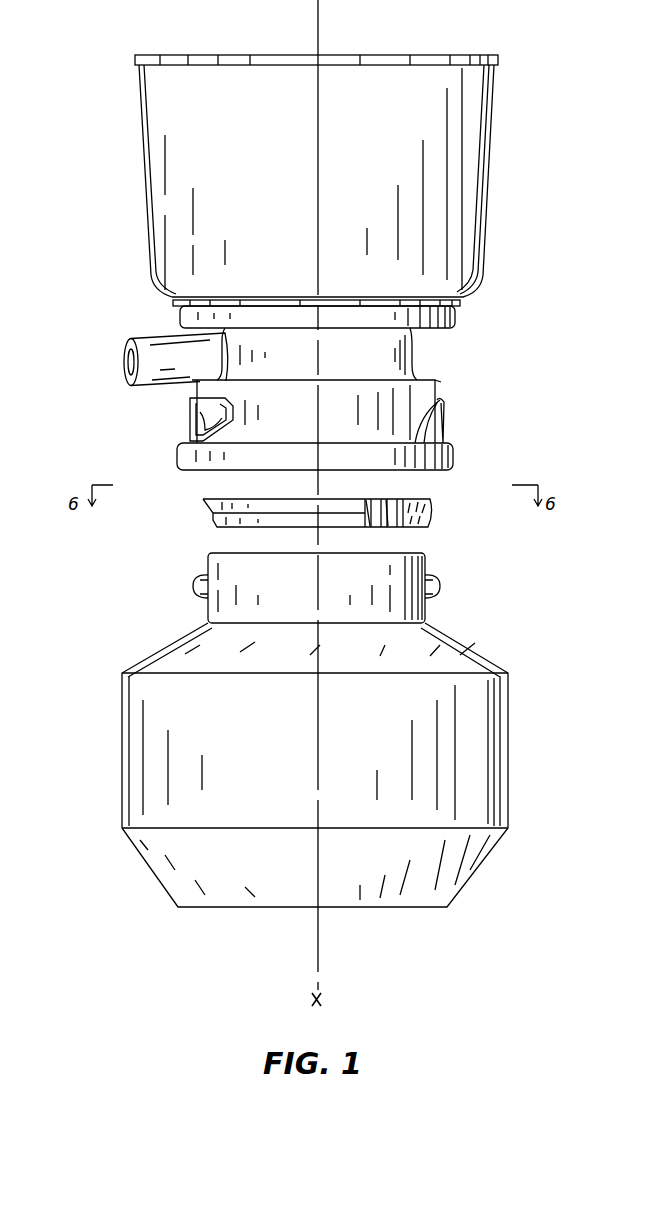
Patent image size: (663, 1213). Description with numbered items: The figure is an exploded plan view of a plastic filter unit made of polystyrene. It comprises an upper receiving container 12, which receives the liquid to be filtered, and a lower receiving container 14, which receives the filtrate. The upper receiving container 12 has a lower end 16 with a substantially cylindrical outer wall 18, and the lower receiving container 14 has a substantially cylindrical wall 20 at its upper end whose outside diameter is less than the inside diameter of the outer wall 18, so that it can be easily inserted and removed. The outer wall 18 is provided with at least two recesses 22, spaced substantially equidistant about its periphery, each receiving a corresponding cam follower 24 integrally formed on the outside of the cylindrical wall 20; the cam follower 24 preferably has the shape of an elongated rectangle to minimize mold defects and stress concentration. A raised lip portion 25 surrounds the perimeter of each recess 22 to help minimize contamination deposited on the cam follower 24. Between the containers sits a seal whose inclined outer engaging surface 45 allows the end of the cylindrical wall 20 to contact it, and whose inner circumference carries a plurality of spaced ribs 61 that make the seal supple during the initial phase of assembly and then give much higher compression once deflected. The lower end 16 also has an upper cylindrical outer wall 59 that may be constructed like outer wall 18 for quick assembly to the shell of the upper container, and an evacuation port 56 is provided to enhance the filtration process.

The upper receiving container 12 is at (165, 205).
The lower receiving container 14 is at (462, 658).
The lower end 16 is at (413, 355).
The substantially cylindrical outer wall 18 is at (437, 392).
The substantially cylindrical wall 20 is at (411, 556).
The recess 22 is at (200, 426).
The cam follower 24 is at (193, 586).
The raised lip portion 25 is at (441, 404).
The outer engaging surface 45 is at (205, 510).
The evacuation port 56 is at (133, 340).
The upper cylindrical outer wall 59 is at (458, 319).
The spaced ribs 61 is at (394, 500).